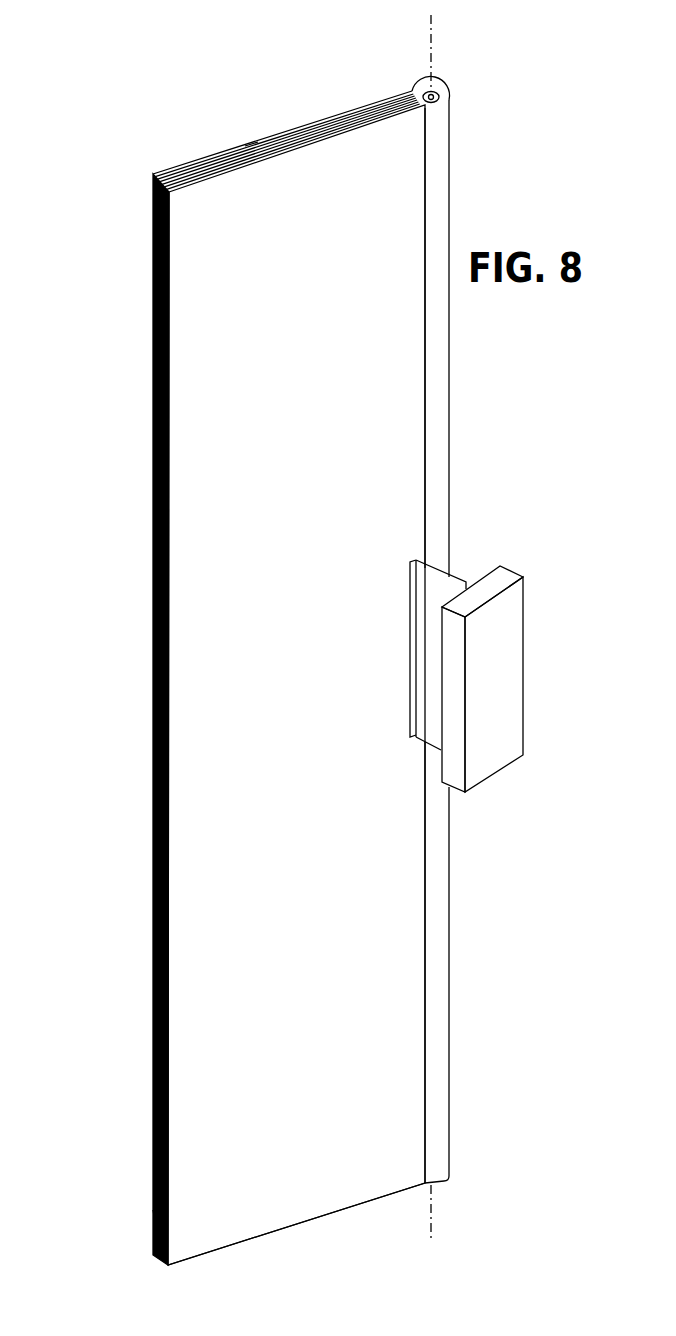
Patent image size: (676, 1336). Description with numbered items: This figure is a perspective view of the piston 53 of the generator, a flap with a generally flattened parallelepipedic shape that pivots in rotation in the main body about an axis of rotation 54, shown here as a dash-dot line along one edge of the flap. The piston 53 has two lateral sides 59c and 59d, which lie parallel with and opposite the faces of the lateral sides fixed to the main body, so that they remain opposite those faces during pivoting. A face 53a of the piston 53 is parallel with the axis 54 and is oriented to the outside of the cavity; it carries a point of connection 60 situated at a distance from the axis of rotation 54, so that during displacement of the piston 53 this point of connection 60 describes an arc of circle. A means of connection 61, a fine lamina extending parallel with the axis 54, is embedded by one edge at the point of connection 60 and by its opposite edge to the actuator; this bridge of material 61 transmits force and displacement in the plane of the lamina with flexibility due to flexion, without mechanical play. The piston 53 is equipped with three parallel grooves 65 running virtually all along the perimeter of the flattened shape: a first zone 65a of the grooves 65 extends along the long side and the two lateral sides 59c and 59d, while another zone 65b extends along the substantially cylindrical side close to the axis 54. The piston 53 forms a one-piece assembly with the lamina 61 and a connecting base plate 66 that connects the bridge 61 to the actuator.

The piston 53 is at (266, 701).
The face of the piston 53a is at (242, 1217).
The axis of rotation 54 is at (436, 36).
The lateral side of the piston 59c is at (345, 99).
The lateral side of the piston 59d is at (351, 1217).
The point of connection 60 is at (421, 558).
The means of connection 61 is at (450, 588).
The groove 65 is at (307, 662).
The first zone of the grooves 65a is at (268, 157).
The another zone of the grooves 65b is at (451, 97).
The connecting base plate 66 is at (505, 625).